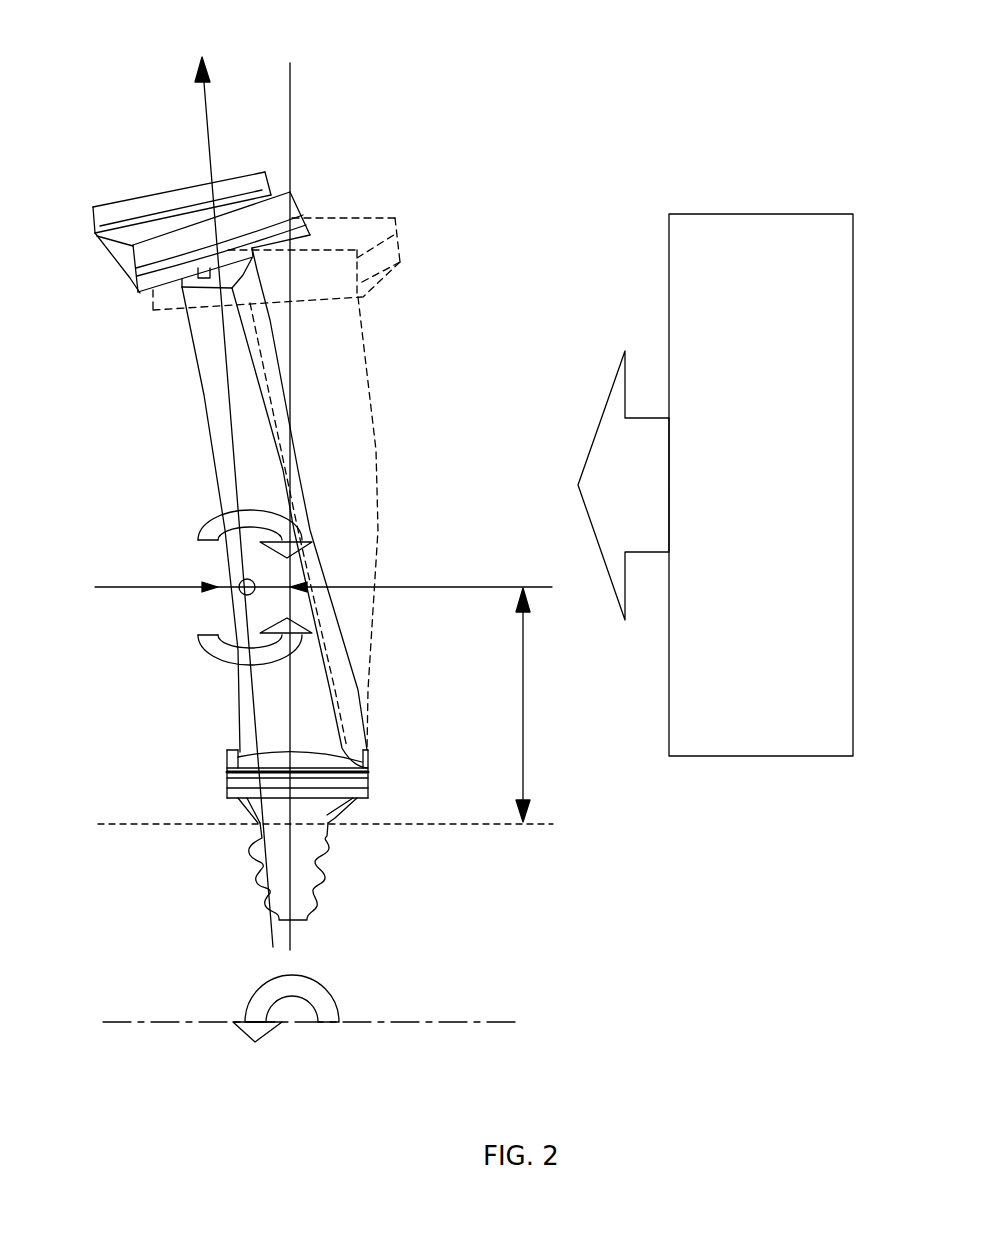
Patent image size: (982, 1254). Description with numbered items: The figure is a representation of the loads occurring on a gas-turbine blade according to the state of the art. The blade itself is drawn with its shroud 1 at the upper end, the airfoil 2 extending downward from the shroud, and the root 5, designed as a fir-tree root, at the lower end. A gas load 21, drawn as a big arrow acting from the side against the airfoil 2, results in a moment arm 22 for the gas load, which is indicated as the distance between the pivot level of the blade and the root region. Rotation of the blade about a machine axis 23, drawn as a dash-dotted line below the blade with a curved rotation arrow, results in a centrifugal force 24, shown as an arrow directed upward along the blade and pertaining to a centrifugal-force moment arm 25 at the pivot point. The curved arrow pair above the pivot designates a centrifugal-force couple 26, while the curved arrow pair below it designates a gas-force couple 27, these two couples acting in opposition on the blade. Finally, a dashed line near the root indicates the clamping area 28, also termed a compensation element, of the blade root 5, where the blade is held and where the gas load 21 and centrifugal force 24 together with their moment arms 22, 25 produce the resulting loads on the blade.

The shroud 1 is at (123, 207).
The airfoil 2 is at (258, 453).
The root 5 is at (322, 897).
The gas load 21 is at (815, 214).
The moment arm 22 is at (524, 713).
The machine axis 23 is at (475, 1022).
The centrifugal force 24 is at (230, 485).
The centrifugal-force moment arm 25 is at (148, 586).
The centrifugal-force couple 26 is at (200, 523).
The gas-force couple 27 is at (203, 647).
The clamping area 28 is at (150, 827).